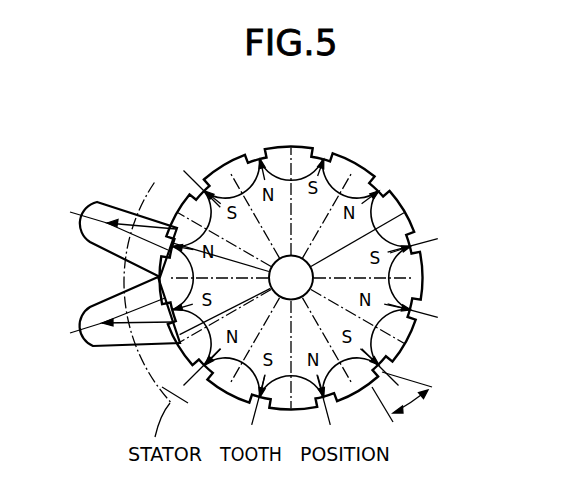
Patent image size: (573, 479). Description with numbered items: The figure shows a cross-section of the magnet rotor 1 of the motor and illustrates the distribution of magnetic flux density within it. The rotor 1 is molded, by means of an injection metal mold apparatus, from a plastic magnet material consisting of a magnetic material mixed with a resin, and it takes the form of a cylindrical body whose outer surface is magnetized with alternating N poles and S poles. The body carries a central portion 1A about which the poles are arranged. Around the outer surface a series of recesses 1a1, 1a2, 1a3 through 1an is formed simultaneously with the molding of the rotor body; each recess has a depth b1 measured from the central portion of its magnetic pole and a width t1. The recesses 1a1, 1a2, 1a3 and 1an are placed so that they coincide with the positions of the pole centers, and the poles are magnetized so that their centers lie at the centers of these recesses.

The magnet rotor 1 is at (450, 282).
The rotor core 1A is at (282, 288).
The recess 1a1 is at (323, 157).
The recess 1a2 is at (379, 189).
The recess 1a3 is at (413, 229).
The recess 1an is at (259, 156).
The depth of recess b1 is at (432, 326).
The width of recess t1 is at (412, 407).